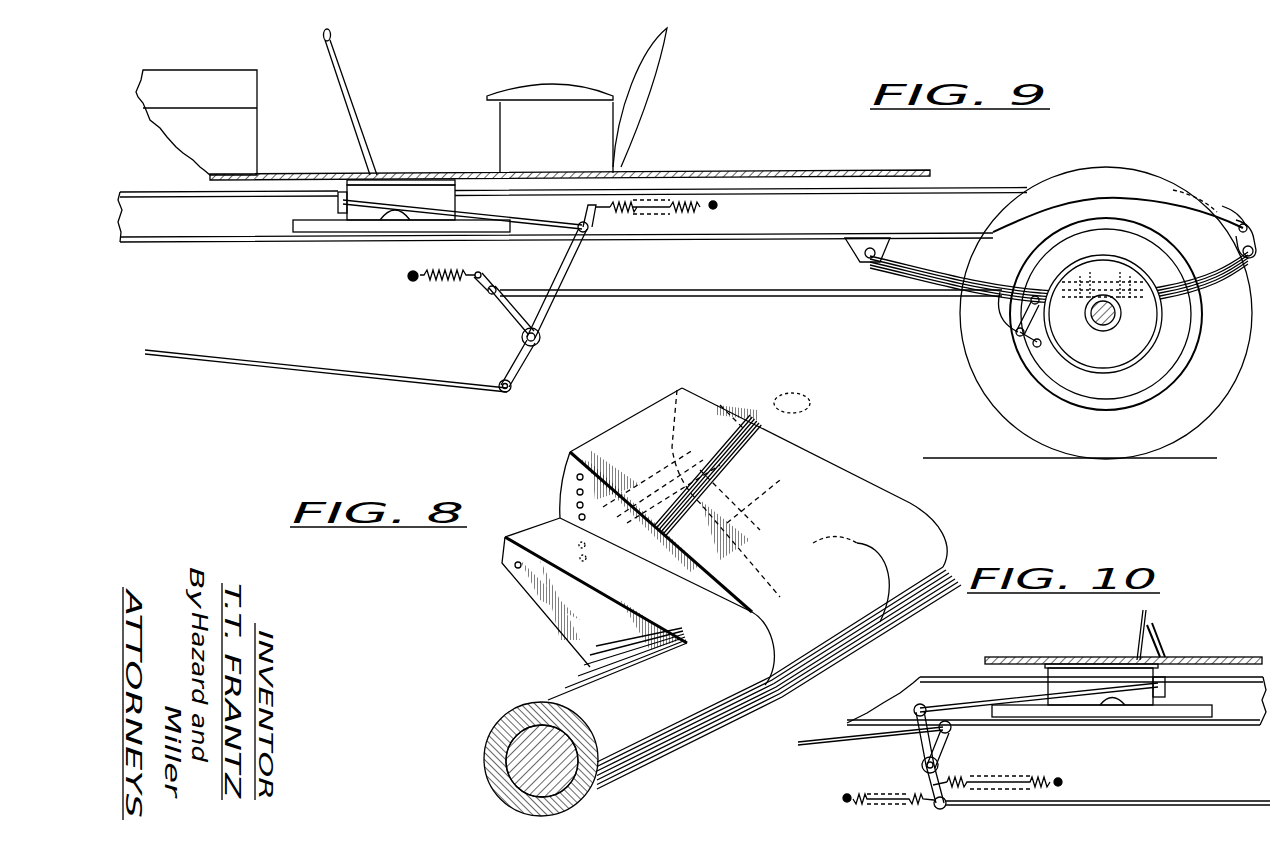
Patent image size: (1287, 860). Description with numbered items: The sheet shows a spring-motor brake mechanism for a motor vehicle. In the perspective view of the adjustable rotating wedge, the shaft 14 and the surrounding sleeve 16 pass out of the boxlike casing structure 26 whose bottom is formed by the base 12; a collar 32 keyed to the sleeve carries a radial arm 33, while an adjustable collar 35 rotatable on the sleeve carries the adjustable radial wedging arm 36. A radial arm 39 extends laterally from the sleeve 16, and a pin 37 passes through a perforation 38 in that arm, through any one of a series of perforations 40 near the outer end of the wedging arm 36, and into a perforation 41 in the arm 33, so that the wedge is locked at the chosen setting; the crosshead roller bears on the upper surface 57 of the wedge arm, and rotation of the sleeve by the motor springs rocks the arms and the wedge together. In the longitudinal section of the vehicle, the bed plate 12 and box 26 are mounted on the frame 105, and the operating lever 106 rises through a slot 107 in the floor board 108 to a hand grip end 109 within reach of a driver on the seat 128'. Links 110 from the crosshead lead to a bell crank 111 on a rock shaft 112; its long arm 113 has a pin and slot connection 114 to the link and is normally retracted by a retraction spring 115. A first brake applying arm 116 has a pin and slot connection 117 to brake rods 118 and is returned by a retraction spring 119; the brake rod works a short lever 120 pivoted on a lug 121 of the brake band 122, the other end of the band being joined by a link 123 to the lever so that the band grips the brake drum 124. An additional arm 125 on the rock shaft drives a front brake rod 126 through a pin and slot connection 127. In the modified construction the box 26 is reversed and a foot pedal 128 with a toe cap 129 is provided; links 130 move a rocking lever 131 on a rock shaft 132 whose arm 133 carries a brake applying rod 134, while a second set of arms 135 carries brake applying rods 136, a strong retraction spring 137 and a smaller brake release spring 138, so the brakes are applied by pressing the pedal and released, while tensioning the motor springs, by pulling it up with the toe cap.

In FIG. 9, the base 12 is at (362, 228).
In FIG. 8, the shaft 14 is at (520, 758).
In FIG. 8, the sleeve 16 is at (530, 697).
In FIG. 9, the boxlike casing structure 26 is at (400, 195).
In FIG. 10, the boxlike casing structure 26 is at (1075, 680).
In FIG. 8, the collar 32 is at (925, 548).
In FIG. 8, the radial arm 33 is at (860, 490).
In FIG. 8, the adjustable collar 35 is at (840, 612).
In FIG. 8, the adjustable radial wedging arm 36 is at (650, 410).
In FIG. 8, the pin 37 is at (517, 569).
In FIG. 8, the perforation 38 is at (514, 566).
In FIG. 8, the radial arm 39 is at (655, 588).
In FIG. 8, the series of perforations 40 is at (576, 476).
In FIG. 8, the perforation 41 is at (765, 430).
In FIG. 8, the upper surface 57 is at (760, 518).
In FIG. 9, the frame 105 is at (758, 205).
In FIG. 9, the operating lever 106 is at (352, 112).
In FIG. 9, the slot 107 is at (380, 173).
In FIG. 9, the floor board 108 is at (300, 160).
In FIG. 9, the hand grip end 109 is at (333, 40).
In FIG. 9, the links 110 is at (468, 218).
In FIG. 9, the bell crank 111 is at (546, 330).
In FIG. 9, the rock shaft 112 is at (541, 343).
In FIG. 9, the long arm 113 is at (573, 257).
In FIG. 9, the pin and slot connection 114 is at (580, 210).
In FIG. 9, the retraction spring 115 is at (680, 212).
In FIG. 9, the first brake applying arm 116 is at (508, 312).
In FIG. 9, the pin and slot connection 117 is at (493, 283).
In FIG. 9, the brake rods 118 is at (712, 298).
In FIG. 9, the retraction spring 119 is at (440, 280).
In FIG. 9, the short lever 120 is at (1000, 298).
In FIG. 9, the lug 121 is at (1032, 345).
In FIG. 9, the brake band 122 is at (1100, 375).
In FIG. 9, the link 123 is at (1016, 330).
In FIG. 9, the brake drum 124 is at (1118, 356).
In FIG. 9, the additional arm 125 is at (513, 360).
In FIG. 9, the brake rod 126 is at (345, 378).
In FIG. 9, the pin and slot connection 127 is at (504, 395).
In FIG. 10, the foot pedal 128 is at (1169, 627).
In FIG. 9, the seat 128' is at (577, 100).
In FIG. 10, the toe cap 129 is at (1165, 637).
In FIG. 10, the links 130 is at (950, 700).
In FIG. 10, the rocking lever 131 is at (920, 738).
In FIG. 10, the rock shaft 132 is at (920, 765).
In FIG. 10, the arm 133 is at (925, 783).
In FIG. 10, the brake applying rod 134 is at (1120, 786).
In FIG. 10, the second set of arms 135 is at (952, 735).
In FIG. 10, the brake applying rods 136 is at (820, 740).
In FIG. 10, the retraction spring 137 is at (1050, 778).
In FIG. 10, the brake release spring 138 is at (840, 798).